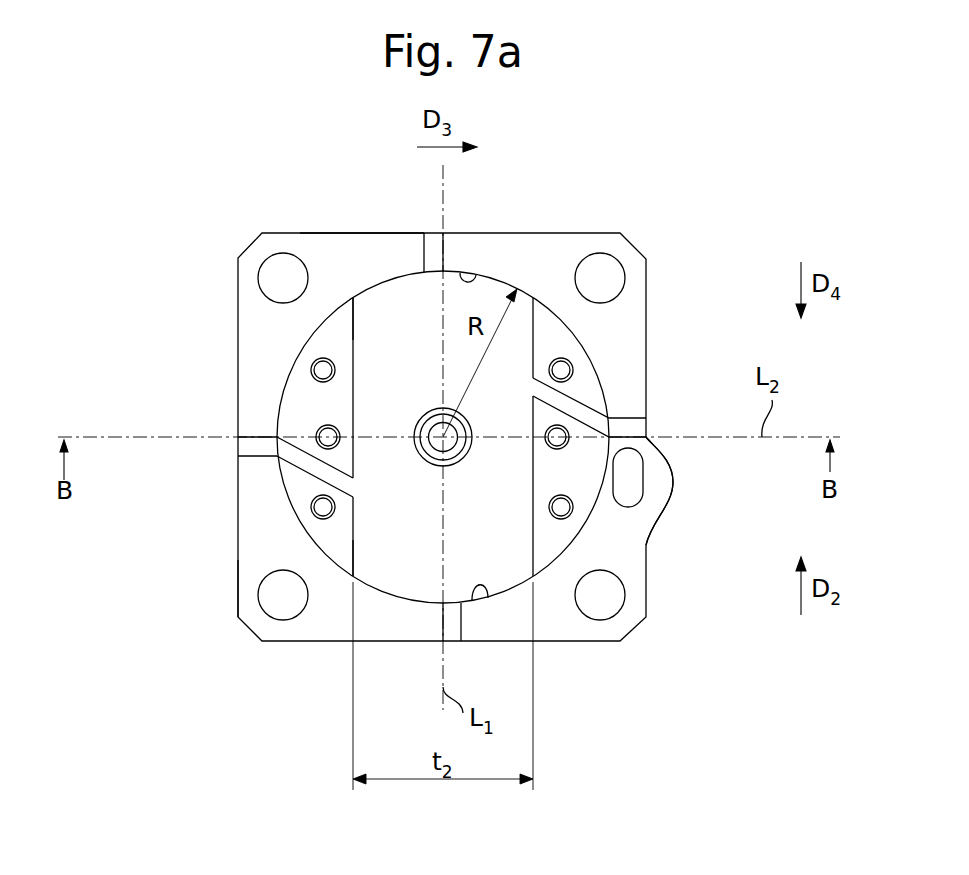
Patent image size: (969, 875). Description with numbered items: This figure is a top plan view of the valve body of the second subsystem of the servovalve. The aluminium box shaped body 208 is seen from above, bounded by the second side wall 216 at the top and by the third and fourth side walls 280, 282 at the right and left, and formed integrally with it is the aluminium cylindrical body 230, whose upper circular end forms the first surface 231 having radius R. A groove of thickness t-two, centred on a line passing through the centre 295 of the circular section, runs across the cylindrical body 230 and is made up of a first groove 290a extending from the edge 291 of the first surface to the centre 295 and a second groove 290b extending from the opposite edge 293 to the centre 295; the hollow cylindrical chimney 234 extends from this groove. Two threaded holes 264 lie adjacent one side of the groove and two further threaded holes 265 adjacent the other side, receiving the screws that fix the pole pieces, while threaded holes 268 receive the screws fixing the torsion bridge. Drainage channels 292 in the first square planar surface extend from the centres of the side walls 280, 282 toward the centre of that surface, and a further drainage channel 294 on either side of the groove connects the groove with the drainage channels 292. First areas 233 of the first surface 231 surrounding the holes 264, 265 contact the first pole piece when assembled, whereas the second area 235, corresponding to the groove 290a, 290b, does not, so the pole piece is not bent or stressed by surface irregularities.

The box shaped body 208 is at (638, 256).
The second side wall 216 is at (384, 233).
The cylindrical body 230 is at (300, 368).
The first surface 231 is at (333, 548).
The first areas 233 is at (327, 335).
The hollow cylindrical chimney 234 is at (462, 457).
The second area 235 is at (367, 290).
The threaded holes 264 is at (325, 383).
The threaded holes 265 is at (572, 370).
The threaded holes 268 is at (318, 446).
The third side wall 280 is at (648, 577).
The fourth side wall 282 is at (237, 600).
The first groove 290a is at (398, 575).
The second groove 290b is at (500, 283).
The edge 291 is at (478, 590).
The drainage channels 292 is at (250, 447).
The opposite edge 293 is at (470, 280).
The further drainage channel 294 is at (333, 477).
The centre 295 is at (428, 452).